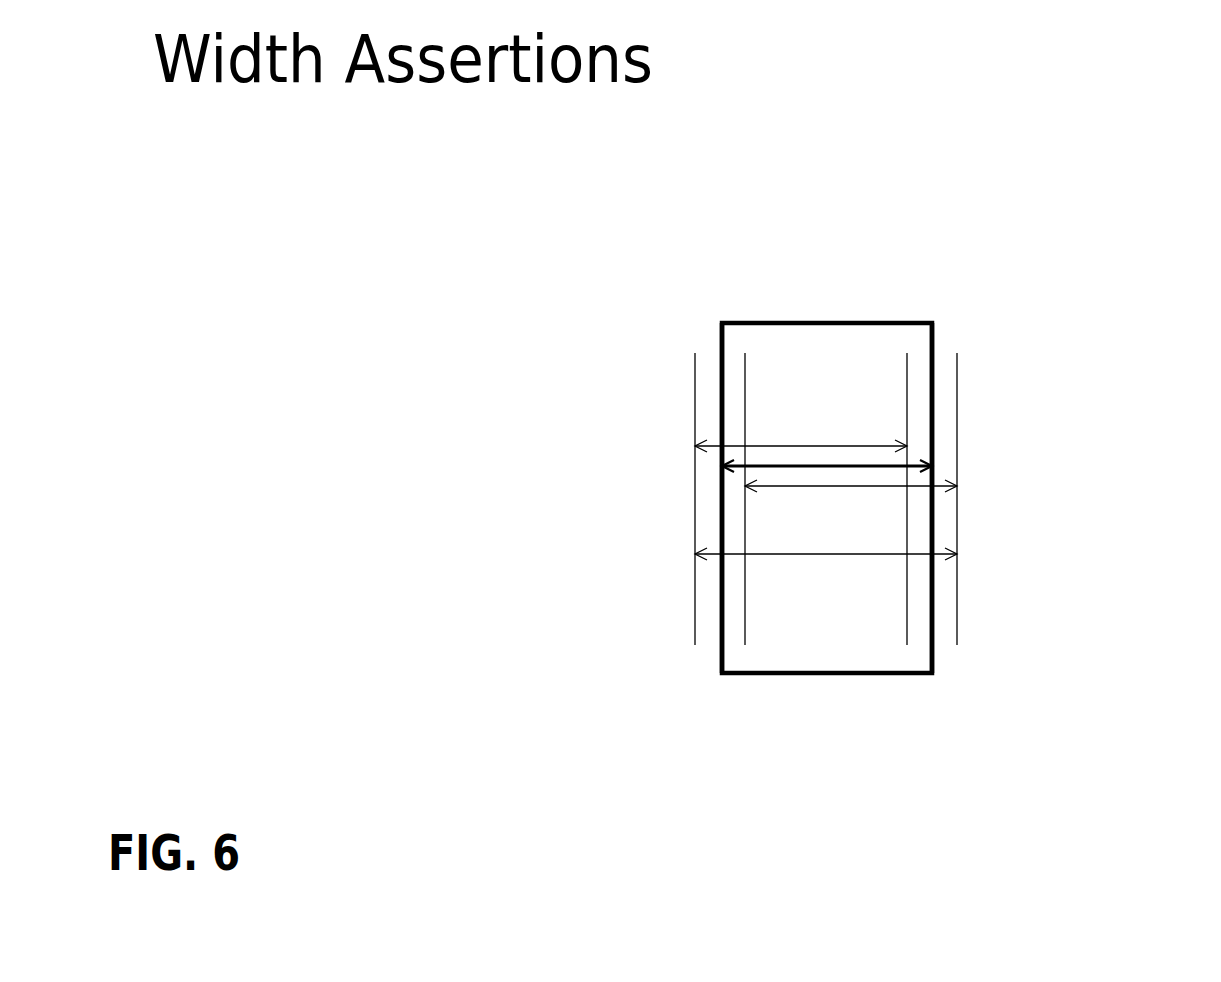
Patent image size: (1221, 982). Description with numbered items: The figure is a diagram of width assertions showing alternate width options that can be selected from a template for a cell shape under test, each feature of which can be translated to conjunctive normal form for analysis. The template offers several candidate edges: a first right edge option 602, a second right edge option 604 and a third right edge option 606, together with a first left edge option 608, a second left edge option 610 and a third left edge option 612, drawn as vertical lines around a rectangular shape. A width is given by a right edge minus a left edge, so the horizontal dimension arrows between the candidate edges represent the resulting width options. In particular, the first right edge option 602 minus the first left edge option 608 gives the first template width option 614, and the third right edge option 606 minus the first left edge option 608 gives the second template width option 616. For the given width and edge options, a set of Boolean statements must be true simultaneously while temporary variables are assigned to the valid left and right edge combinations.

The right edge option r1 602 is at (905, 350).
The right edge option r2 604 is at (934, 349).
The right edge option r3 606 is at (1138, 248).
The left edge option l1 608 is at (693, 643).
The left edge option l2 610 is at (720, 675).
The left edge option l3 612 is at (746, 652).
The template width option w1 614 is at (822, 410).
The template width option w2 616 is at (830, 632).